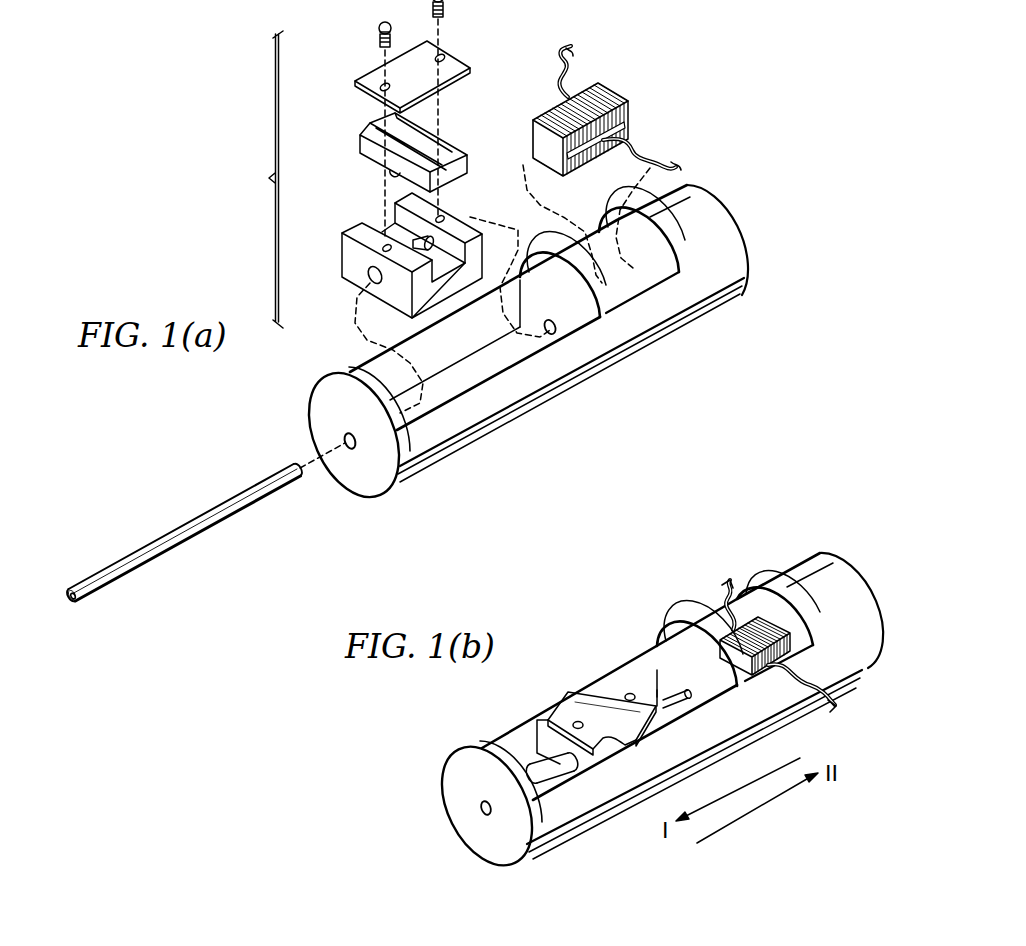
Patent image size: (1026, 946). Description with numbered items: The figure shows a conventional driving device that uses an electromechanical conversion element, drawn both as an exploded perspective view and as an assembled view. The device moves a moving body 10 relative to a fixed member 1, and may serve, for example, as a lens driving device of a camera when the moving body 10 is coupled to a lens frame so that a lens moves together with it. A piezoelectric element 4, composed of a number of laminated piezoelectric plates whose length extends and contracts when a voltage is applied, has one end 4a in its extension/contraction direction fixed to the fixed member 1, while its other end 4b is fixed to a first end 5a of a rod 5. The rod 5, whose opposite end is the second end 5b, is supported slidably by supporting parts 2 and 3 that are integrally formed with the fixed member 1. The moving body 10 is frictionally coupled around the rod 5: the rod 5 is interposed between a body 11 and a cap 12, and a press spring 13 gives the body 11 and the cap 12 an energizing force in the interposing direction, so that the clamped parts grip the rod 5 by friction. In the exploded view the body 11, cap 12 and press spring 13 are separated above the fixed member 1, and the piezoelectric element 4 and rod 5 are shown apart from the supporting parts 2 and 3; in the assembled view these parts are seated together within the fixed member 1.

In FIG. 1A, the fixed member 1 is at (706, 203).
In FIG. 1B, the fixed member 1 is at (840, 571).
In FIG. 1A, the supporting part 2 is at (610, 320).
In FIG. 1B, the supporting part 2 is at (677, 631).
In FIG. 1A, the supporting part 3 is at (433, 455).
In FIG. 1B, the supporting part 3 is at (467, 750).
In FIG. 1A, the piezoelectric element 4 is at (547, 109).
In FIG. 1A, the one end of piezoelectric element 4a is at (616, 96).
In FIG. 1A, the other end of piezoelectric element 4b is at (535, 141).
In FIG. 1A, the rod 5 is at (180, 527).
In FIG. 1B, the rod 5 is at (548, 773).
In FIG. 1A, the first end of rod 5a is at (297, 461).
In FIG. 1A, the second end of rod 5b is at (72, 603).
In FIG. 1A, the moving body 10 is at (261, 179).
In FIG. 1B, the moving body 10 is at (562, 670).
In FIG. 1A, the body 11 is at (342, 258).
In FIG. 1A, the cap 12 is at (358, 140).
In FIG. 1A, the press spring 13 is at (356, 84).